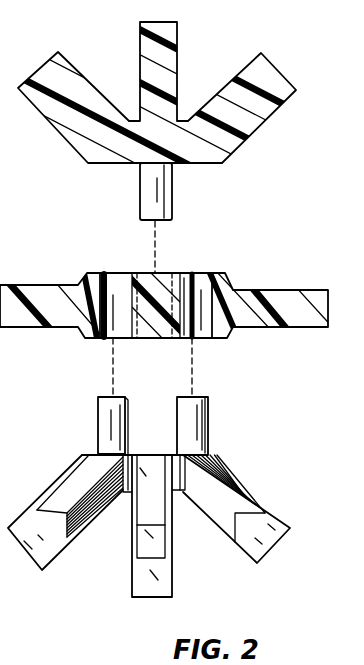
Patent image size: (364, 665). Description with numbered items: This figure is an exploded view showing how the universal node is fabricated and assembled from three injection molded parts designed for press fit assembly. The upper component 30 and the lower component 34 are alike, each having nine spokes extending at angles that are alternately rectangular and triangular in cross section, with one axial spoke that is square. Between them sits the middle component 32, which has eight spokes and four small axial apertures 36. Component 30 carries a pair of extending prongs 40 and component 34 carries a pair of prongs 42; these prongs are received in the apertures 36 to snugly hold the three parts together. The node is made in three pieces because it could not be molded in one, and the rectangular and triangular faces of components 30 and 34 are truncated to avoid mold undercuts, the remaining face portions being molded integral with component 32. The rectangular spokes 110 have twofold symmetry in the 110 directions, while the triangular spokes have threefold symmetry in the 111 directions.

The component 30 is at (192, 66).
The prongs or projections 40 is at (146, 197).
The component 32 is at (274, 273).
The axial apertures 36 is at (201, 281).
The component 34 is at (171, 481).
The prongs or projections 42 is at (120, 397).
The rectangular spokes 110 is at (285, 515).
The triangular spokes direction 111 is at (70, 536).